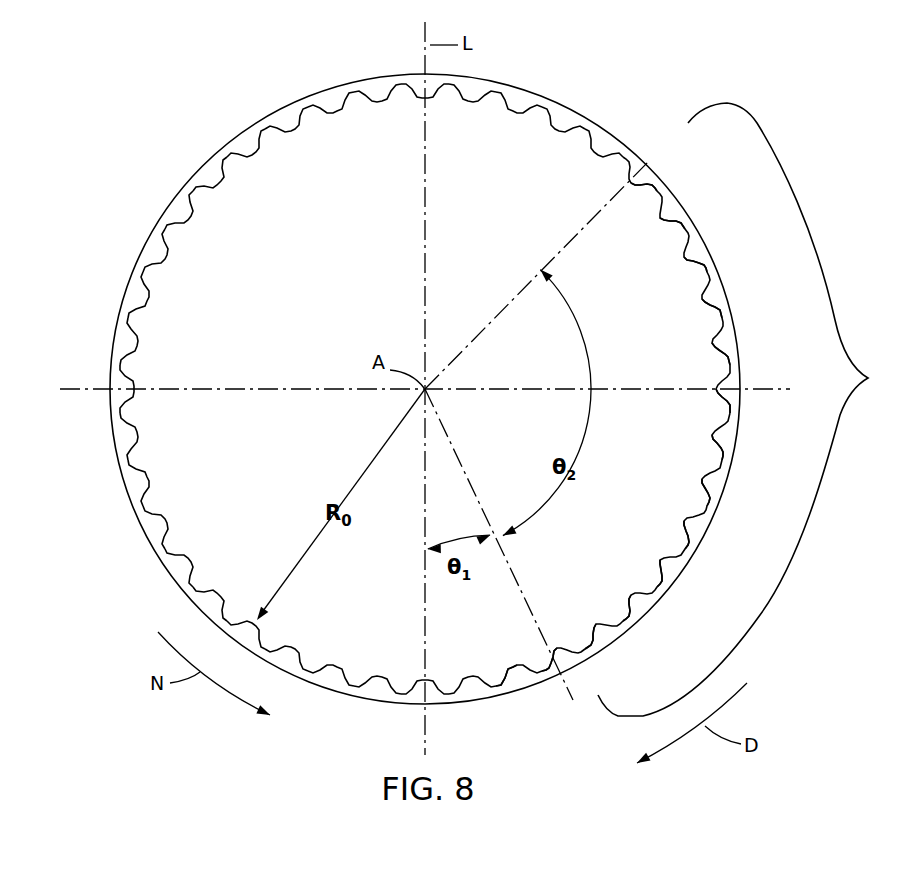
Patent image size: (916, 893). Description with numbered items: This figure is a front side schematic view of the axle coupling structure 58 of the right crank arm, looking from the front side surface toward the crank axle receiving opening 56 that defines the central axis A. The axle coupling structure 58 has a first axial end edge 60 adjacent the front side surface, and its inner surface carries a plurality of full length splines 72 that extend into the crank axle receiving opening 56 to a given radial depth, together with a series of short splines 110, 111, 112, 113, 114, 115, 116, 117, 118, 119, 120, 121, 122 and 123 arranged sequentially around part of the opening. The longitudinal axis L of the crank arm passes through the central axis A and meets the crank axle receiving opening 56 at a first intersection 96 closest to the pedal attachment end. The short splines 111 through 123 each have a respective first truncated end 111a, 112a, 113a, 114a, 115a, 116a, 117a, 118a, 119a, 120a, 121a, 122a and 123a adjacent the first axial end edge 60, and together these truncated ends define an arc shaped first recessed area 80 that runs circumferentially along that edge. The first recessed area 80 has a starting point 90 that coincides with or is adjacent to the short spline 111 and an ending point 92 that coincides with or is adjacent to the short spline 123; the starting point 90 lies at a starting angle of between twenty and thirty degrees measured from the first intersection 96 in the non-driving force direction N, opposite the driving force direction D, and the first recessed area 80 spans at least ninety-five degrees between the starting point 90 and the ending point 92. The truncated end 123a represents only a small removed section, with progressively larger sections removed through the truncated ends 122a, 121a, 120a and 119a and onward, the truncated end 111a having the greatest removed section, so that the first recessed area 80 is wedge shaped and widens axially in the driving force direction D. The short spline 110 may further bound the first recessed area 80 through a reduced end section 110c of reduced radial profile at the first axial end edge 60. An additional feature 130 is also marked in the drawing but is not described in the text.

The crank axle receiving opening 56 is at (148, 395).
The axle coupling structure 58 is at (207, 100).
The first axial end edge 60 is at (182, 574).
The full length splines 72 is at (221, 184).
The first recessed area 80 is at (872, 378).
The starting point 90 is at (499, 558).
The ending point 92 is at (546, 245).
The first intersection 96 is at (428, 690).
The short spline 110 is at (515, 666).
The reduced end section 110c is at (517, 673).
The short spline 111 is at (558, 648).
The short spline 112 is at (597, 624).
The short spline 113 is at (631, 594).
The short spline 114 is at (661, 560).
The short spline 115 is at (685, 521).
The short spline 116 is at (703, 480).
The short spline 117 is at (713, 436).
The short spline 118 is at (716, 388).
The short spline 119 is at (713, 344).
The short spline 120 is at (702, 300).
The short spline 121 is at (684, 259).
The short spline 122 is at (661, 220).
The short spline 123 is at (631, 186).
The first truncated end 111a is at (555, 661).
The first truncated end 112a is at (596, 637).
The first truncated end 113a is at (632, 607).
The first truncated end 114a is at (664, 572).
The first truncated end 115a is at (690, 533).
The first truncated end 116a is at (709, 489).
The first truncated end 117a is at (721, 444).
The first truncated end 118a is at (726, 397).
The first truncated end 119a is at (723, 350).
The first truncated end 120a is at (714, 303).
The first truncated end 121a is at (697, 259).
The first truncated end 122a is at (673, 218).
The first truncated end 123a is at (644, 160).
The tooth 130 is at (471, 676).